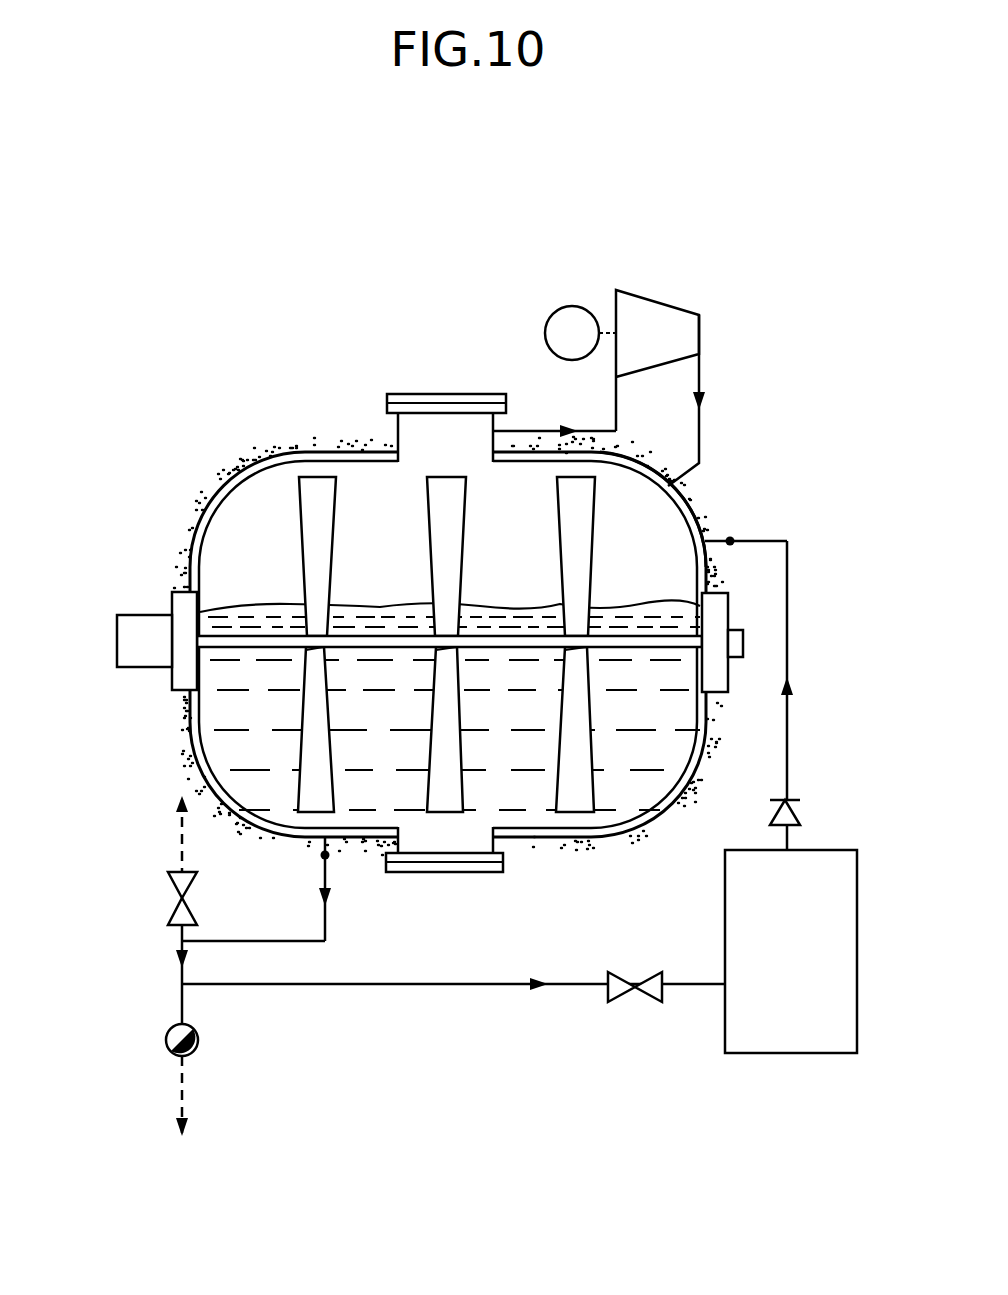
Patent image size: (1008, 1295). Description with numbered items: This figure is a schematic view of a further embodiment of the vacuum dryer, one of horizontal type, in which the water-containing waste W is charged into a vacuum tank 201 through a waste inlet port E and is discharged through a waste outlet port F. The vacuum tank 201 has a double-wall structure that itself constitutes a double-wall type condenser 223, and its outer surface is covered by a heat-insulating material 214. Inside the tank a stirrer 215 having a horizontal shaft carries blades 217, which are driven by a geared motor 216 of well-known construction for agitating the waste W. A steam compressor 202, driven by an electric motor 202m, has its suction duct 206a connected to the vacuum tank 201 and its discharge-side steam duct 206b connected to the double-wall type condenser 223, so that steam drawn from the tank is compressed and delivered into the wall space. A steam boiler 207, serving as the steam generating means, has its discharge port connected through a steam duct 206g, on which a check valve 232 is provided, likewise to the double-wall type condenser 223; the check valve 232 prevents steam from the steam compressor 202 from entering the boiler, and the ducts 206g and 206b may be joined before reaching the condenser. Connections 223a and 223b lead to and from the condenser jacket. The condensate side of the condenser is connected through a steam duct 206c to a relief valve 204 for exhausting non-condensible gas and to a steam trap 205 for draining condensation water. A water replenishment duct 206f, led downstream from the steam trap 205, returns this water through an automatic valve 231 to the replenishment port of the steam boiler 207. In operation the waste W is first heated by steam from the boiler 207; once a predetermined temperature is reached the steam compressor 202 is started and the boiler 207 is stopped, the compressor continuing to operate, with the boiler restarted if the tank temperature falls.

The vacuum tank 201 is at (192, 520).
The steam compressor 202 is at (662, 303).
The electric motor 202m is at (548, 318).
The relief valve 204 is at (168, 906).
The steam trap 205 is at (168, 1030).
The suction duct 206a is at (538, 428).
The steam duct 206b is at (700, 452).
The steam duct 206c is at (188, 938).
The water replenishment duct 206f is at (462, 987).
The steam duct 206g is at (785, 640).
The steam boiler 207 is at (722, 1040).
The heat-insulating material 214 is at (303, 444).
The stirrer 215 is at (258, 636).
The geared motor 216 is at (120, 640).
The blades 217 is at (453, 515).
The double-wall type condenser 223 is at (688, 524).
The jacket outlet pipe 223a is at (735, 545).
The jacket inlet pipe 223b is at (330, 858).
The automatic valve 231 is at (630, 975).
The check valve 232 is at (800, 815).
The waste inlet port E is at (448, 394).
The waste outlet port F is at (448, 872).
The waste W is at (514, 604).